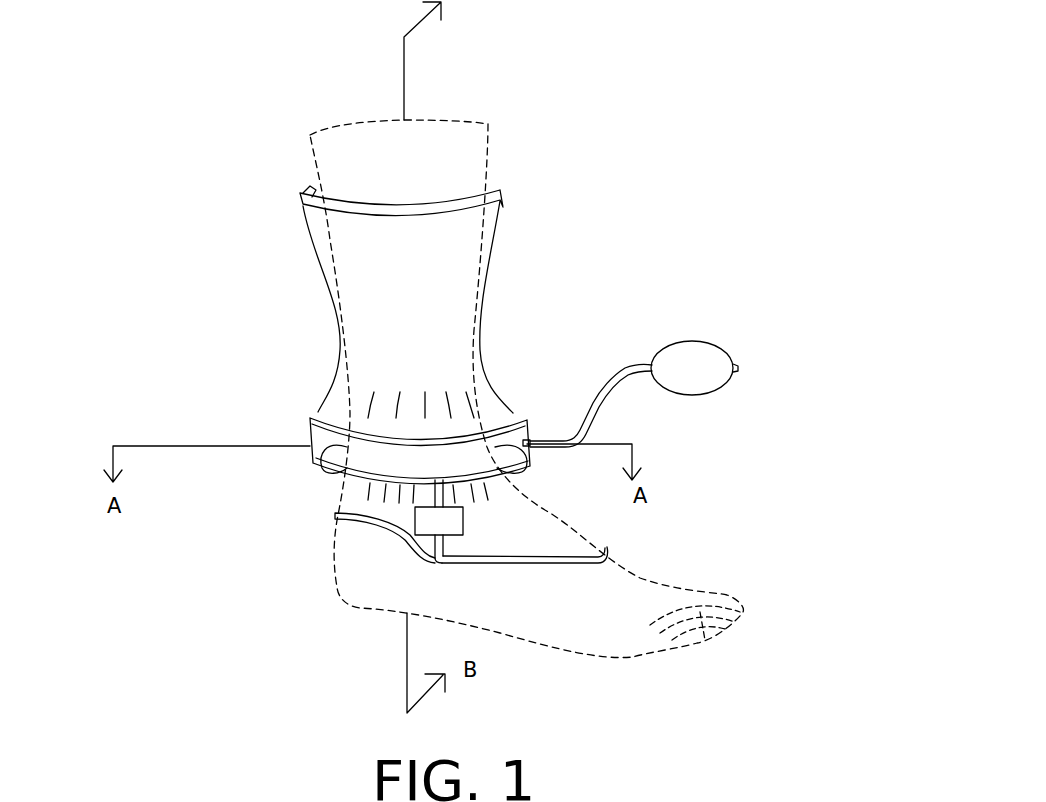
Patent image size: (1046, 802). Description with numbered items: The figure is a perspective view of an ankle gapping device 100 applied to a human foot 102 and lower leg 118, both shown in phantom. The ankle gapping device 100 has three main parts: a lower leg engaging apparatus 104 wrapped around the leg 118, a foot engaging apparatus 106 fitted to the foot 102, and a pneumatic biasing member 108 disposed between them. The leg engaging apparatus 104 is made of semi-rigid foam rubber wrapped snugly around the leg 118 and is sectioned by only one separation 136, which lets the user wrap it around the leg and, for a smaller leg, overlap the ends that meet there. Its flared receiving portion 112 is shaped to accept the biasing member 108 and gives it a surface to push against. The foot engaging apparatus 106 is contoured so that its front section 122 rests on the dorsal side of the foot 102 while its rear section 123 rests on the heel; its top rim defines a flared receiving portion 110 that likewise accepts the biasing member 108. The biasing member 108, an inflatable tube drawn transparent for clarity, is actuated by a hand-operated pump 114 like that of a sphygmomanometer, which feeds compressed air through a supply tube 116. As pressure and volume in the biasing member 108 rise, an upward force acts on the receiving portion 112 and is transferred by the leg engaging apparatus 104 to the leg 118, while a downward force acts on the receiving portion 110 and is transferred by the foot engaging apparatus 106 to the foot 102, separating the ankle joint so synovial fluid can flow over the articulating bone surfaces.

The ankle gapping device 100 is at (254, 208).
The foot 102 is at (637, 637).
The lower leg engaging apparatus 104 is at (490, 290).
The foot engaging apparatus 106 is at (473, 543).
The pneumatic biasing member 108 is at (335, 483).
The flared receiving portion 110 is at (337, 477).
The flared receiving portion 112 is at (308, 416).
The pump 114 is at (723, 347).
The supply tube 116 is at (633, 365).
The leg 118 is at (490, 167).
The front section 122 is at (573, 523).
The rear section 123 is at (388, 510).
The separation 136 is at (310, 190).